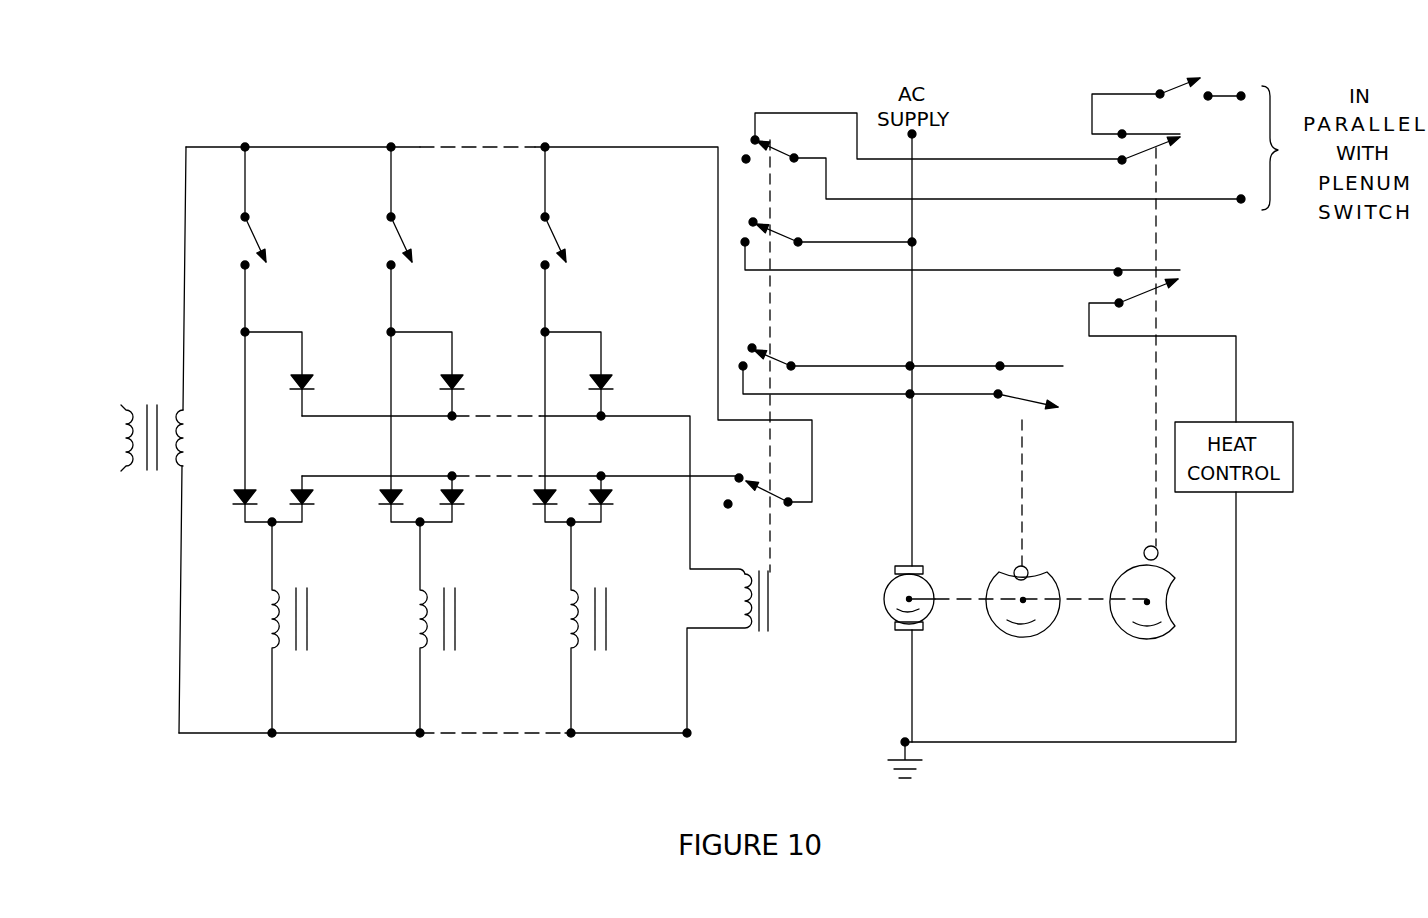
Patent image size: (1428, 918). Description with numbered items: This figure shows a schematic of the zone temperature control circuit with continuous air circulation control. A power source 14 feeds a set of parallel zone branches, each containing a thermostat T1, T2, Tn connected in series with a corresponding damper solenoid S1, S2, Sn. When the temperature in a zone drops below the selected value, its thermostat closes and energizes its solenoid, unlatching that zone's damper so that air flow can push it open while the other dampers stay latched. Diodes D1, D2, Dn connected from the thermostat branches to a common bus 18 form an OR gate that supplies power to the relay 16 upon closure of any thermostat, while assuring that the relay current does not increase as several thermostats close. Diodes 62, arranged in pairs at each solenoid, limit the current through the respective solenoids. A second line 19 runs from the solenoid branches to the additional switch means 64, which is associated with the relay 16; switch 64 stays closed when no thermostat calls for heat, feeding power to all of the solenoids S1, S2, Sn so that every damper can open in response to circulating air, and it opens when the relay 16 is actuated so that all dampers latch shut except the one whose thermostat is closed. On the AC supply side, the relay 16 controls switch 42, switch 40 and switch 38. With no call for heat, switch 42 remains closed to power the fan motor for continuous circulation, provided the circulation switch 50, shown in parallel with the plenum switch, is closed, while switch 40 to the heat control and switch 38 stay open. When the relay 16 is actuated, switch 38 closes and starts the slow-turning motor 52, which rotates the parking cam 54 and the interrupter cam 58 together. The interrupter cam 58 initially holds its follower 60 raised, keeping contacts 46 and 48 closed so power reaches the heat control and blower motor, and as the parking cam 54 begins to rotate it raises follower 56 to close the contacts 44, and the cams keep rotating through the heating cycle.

The power source 14 is at (134, 466).
The relay 16 is at (743, 631).
The bus 18 is at (334, 416).
The line 19 is at (334, 476).
The switch 38 is at (901, 370).
The switch 40 is at (960, 244).
The switch 42 is at (993, 158).
The contacts 44 is at (996, 399).
The contacts 46 is at (1158, 345).
The contacts 48 is at (1131, 129).
The circulation switch 50 is at (1200, 85).
The motor 52 is at (890, 610).
The parking cam 54 is at (990, 616).
The follower 56 is at (1028, 566).
The interrupter cam 58 is at (1116, 616).
The follower 60 is at (1158, 553).
The diodes 62 is at (297, 494).
The switch means 64 is at (769, 505).
The thermostat T1 is at (259, 208).
The thermostat T2 is at (405, 208).
The thermostat Tn is at (559, 208).
The diode D1 is at (294, 374).
The diode D2 is at (442, 374).
The diode Dn is at (594, 374).
The solenoid S1 is at (303, 627).
The solenoid S2 is at (452, 627).
The solenoid Sn is at (602, 627).